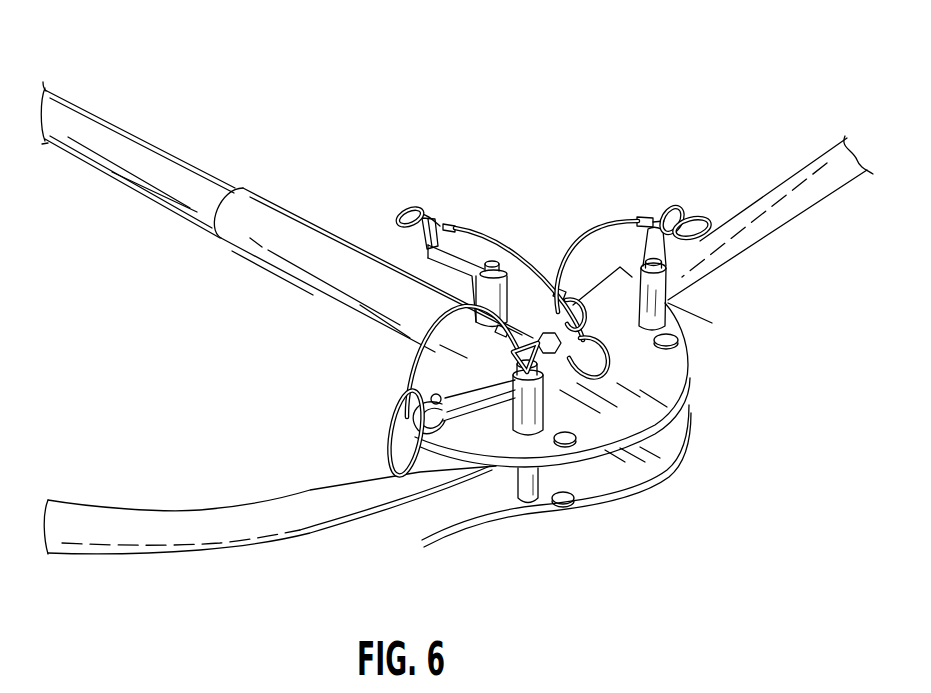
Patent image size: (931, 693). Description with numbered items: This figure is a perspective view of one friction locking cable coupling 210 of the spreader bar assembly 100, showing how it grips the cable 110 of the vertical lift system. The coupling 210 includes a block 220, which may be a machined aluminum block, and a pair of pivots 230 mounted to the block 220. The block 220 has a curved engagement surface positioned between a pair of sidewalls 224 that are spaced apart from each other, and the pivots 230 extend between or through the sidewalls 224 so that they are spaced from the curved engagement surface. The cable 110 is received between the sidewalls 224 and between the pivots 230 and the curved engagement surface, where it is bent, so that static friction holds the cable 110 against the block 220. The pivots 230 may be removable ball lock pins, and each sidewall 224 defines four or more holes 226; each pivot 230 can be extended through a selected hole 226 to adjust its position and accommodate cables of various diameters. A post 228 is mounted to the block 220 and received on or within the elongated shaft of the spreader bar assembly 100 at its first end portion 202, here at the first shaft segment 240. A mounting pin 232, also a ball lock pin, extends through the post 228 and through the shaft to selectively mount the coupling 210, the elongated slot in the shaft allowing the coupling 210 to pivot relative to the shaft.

The spreader bar assembly 100 is at (450, 308).
The cable 110 is at (817, 182).
The first end portion 202 is at (518, 370).
The friction locking cable coupling 210 is at (586, 438).
The block 220 is at (320, 220).
The sidewalls 224 is at (640, 432).
The holes 226 is at (646, 345).
The post 228 is at (288, 270).
The pivots 230 is at (664, 310).
The mounting pin 232 is at (463, 267).
The first shaft segment 240 is at (112, 173).